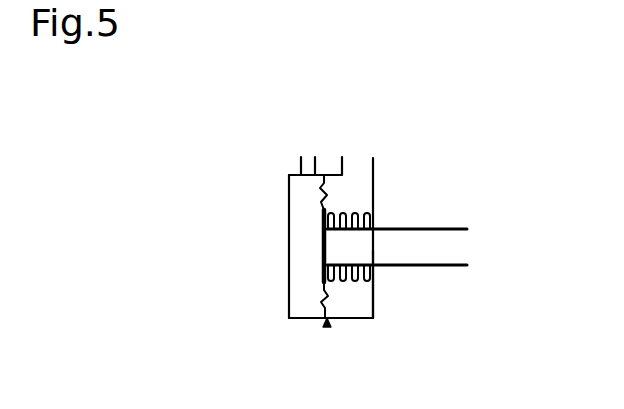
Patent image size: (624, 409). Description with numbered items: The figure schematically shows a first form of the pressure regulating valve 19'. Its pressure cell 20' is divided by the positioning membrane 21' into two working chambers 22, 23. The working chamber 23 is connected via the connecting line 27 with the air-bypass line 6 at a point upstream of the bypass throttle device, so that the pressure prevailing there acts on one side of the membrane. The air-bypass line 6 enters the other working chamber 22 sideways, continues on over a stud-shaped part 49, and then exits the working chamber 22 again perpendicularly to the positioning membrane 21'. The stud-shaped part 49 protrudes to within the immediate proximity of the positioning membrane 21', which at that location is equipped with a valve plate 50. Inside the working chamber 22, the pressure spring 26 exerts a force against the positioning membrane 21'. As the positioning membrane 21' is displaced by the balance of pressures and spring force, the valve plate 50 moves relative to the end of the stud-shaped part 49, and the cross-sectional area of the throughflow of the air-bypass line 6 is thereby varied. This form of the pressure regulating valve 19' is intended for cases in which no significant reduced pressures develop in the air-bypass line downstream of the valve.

The connecting line 27 is at (309, 172).
The air-bypass line 6 is at (353, 180).
The positioning membrane 21' is at (252, 184).
The valve plate 50 is at (321, 238).
The working chamber 23 is at (305, 263).
The pressure cell 20' is at (309, 351).
The pressure regulating valve 19' is at (334, 333).
The working chamber 22 is at (347, 297).
The stud-shaped part 49 is at (365, 268).
The pressure spring 26 is at (342, 212).